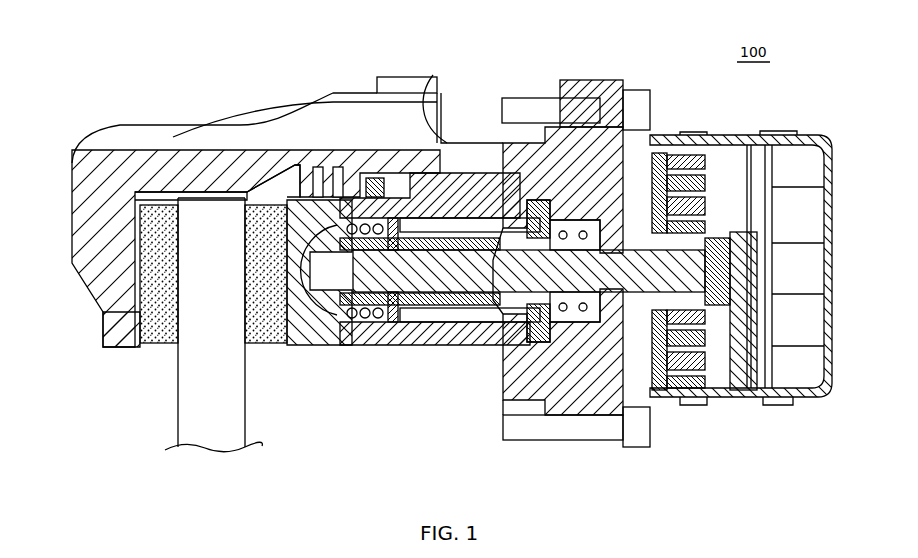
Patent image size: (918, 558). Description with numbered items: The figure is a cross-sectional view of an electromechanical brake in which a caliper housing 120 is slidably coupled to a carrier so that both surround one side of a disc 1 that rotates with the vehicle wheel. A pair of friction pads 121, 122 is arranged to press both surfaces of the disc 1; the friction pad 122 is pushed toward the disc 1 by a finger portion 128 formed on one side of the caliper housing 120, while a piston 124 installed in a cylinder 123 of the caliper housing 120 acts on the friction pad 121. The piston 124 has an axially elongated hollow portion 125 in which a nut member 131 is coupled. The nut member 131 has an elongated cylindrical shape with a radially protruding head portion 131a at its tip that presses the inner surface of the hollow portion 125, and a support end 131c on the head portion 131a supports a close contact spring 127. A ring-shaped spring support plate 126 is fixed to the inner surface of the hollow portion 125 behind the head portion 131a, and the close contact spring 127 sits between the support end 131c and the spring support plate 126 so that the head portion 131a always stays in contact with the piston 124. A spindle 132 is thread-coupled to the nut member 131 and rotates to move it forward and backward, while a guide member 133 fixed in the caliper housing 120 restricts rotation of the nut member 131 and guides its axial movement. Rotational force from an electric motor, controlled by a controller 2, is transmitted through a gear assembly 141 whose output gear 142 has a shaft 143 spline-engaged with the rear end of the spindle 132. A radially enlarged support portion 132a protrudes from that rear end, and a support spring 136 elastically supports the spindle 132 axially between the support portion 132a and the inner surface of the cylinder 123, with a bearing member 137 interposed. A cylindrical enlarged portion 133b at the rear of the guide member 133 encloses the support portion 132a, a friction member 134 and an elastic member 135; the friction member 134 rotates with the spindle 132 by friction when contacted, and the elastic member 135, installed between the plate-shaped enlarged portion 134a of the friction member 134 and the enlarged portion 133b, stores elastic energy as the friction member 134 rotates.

The disc 1 is at (237, 433).
The controller 2 is at (778, 360).
The caliper housing 120 is at (148, 126).
The friction pad 121 is at (260, 345).
The friction pad 122 is at (165, 345).
The cylinder 123 is at (437, 99).
The piston 124 is at (300, 345).
The hollow portion 125 is at (345, 345).
The spring support plate 126 is at (393, 77).
The close contact spring 127 is at (377, 197).
The finger portion 128 is at (100, 345).
The nut member 131 is at (410, 345).
The head portion 131a is at (290, 192).
The support end 131c is at (318, 167).
The spindle 132 is at (437, 330).
The support portion 132a is at (553, 200).
The guide member 133 is at (500, 175).
The enlarged portion 133b is at (500, 357).
The friction member 134 is at (600, 125).
The enlarged portion 134a is at (595, 345).
The elastic member 135 is at (503, 413).
The support spring 136 is at (550, 385).
The bearing member 137 is at (650, 152).
The gear assembly 141 is at (712, 362).
The output gear 142 is at (712, 360).
The shaft 143 is at (700, 300).